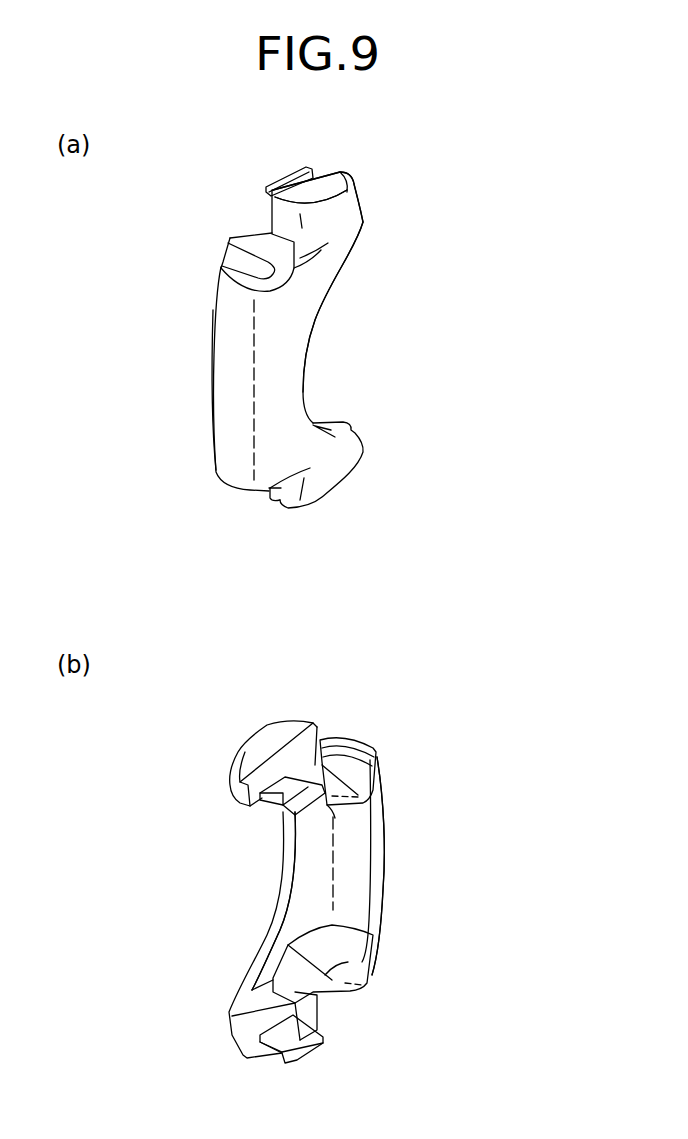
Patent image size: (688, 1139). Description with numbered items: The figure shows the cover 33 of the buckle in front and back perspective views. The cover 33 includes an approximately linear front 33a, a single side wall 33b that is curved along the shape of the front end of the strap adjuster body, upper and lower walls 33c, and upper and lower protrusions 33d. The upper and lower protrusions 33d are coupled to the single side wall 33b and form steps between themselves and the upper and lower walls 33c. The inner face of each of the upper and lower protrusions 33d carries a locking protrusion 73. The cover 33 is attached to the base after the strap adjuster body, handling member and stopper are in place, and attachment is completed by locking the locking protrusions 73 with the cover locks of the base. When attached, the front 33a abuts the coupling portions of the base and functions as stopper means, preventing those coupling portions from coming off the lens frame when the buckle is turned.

The cover 33 is at (404, 248).
The front 33a is at (226, 384).
The side wall 33b is at (288, 350).
The upper and lower walls 33c is at (252, 240).
The upper and lower protrusions 33d is at (342, 218).
The locking protrusion 73 is at (302, 167).